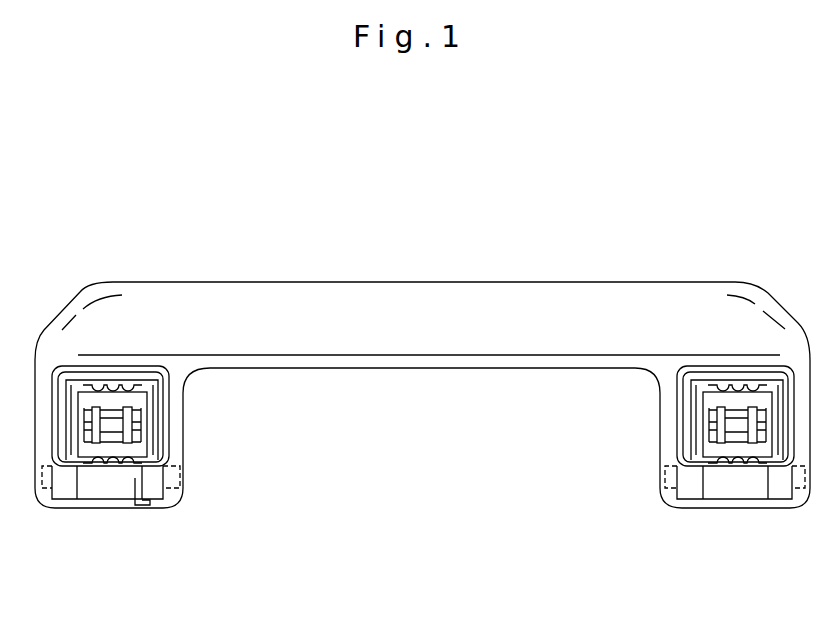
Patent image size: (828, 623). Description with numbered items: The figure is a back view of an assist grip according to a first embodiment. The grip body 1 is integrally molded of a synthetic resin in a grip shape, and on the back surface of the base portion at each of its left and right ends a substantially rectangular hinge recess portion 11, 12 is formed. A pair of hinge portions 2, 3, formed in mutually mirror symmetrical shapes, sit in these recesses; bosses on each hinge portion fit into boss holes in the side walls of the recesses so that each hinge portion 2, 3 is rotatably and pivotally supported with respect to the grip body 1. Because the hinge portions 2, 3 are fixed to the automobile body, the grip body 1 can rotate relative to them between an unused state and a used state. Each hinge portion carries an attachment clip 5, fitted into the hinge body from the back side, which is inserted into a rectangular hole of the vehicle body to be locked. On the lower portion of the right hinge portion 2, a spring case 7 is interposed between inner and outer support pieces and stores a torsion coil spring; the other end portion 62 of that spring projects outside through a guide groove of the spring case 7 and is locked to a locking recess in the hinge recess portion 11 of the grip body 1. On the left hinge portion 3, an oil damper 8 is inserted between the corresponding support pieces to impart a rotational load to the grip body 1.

The grip body 1 is at (433, 282).
The hinge portion 2 is at (157, 486).
The hinge portion 3 is at (689, 479).
The attachment clip 5 is at (113, 437).
The spring case 7 is at (111, 536).
The oil damper 8 is at (743, 493).
The hinge recess portion 11 is at (167, 405).
The hinge recess portion 12 is at (678, 405).
The other end portion 62 is at (142, 507).